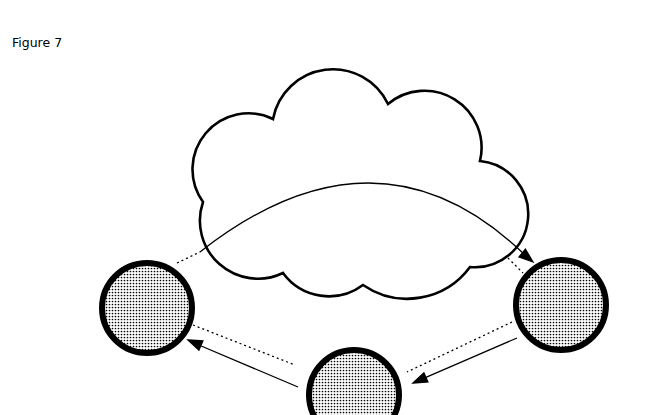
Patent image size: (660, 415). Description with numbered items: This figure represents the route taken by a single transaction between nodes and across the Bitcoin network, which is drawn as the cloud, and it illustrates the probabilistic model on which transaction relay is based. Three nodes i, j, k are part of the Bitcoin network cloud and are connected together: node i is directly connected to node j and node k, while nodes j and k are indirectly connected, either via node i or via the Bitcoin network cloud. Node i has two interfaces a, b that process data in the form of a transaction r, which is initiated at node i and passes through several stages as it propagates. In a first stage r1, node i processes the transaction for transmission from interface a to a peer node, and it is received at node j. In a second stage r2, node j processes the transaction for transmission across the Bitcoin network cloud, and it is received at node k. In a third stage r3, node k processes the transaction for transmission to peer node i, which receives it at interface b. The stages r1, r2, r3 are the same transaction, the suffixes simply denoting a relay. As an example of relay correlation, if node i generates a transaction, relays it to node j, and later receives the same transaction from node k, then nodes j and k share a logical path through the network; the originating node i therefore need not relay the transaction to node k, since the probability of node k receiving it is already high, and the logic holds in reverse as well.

The first stage of transaction relay r1 is at (243, 364).
The second stage of transaction relay r2 is at (355, 205).
The third stage of transaction relay r3 is at (462, 363).
The interface a is at (305, 359).
The interface b is at (402, 359).
The node i is at (354, 382).
The node j is at (147, 308).
The node k is at (561, 305).
The Bitcoin network cloud is at (391, 180).